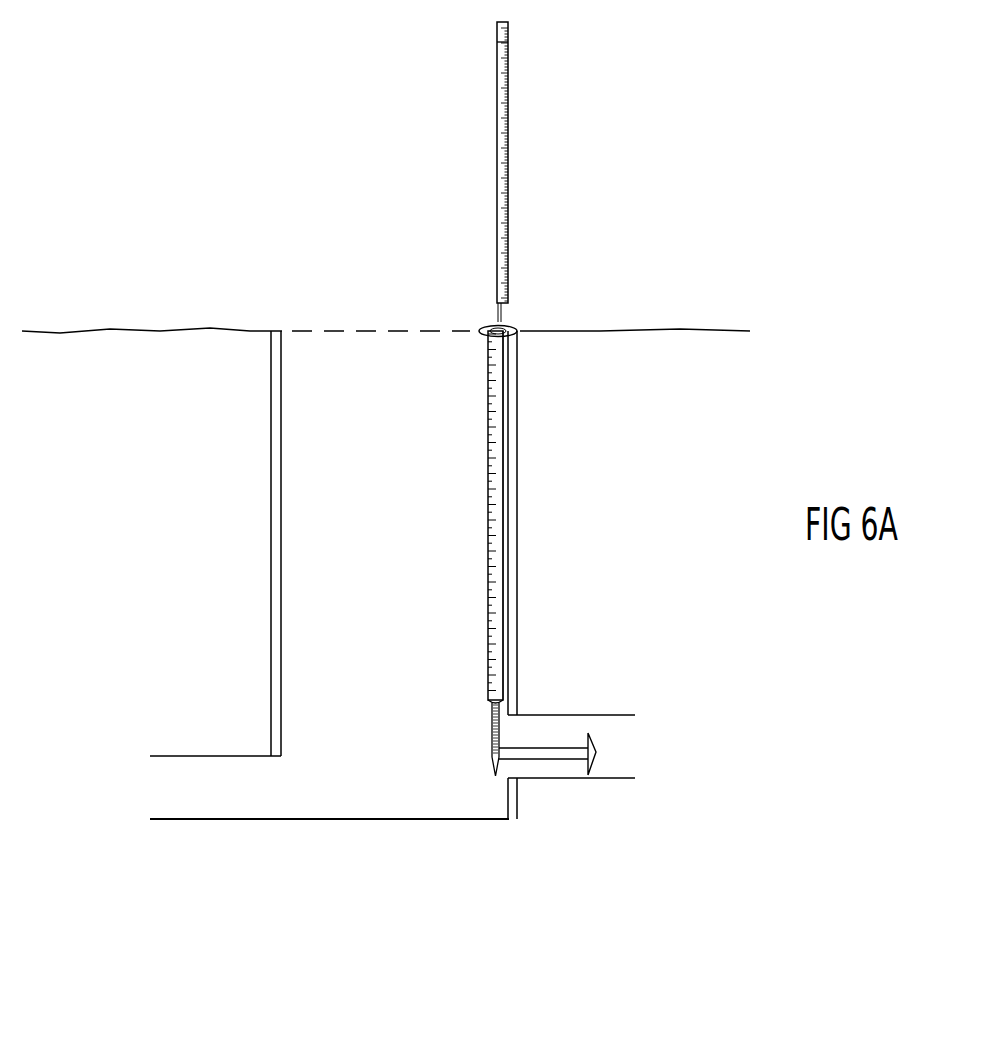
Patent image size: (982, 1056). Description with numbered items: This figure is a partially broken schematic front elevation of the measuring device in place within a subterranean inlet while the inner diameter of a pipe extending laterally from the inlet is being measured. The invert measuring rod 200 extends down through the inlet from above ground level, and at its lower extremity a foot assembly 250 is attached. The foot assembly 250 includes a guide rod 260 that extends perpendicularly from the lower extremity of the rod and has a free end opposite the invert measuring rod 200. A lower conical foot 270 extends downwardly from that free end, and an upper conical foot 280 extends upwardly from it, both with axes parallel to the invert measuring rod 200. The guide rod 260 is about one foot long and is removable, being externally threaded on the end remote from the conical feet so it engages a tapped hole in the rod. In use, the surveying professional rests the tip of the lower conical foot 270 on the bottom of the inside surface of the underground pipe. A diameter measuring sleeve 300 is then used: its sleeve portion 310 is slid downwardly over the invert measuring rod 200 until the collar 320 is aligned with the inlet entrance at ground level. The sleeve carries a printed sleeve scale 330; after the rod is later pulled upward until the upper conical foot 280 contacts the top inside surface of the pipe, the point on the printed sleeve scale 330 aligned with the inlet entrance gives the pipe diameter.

The invert measuring rod 200 is at (485, 104).
The collar 320 is at (510, 324).
The diameter measuring sleeve 300 is at (476, 450).
The printed sleeve scale 330 is at (510, 449).
The sleeve portion 310 is at (492, 527).
The guide rod 260 is at (543, 748).
The upper conical foot 280 is at (592, 734).
The lower conical foot 270 is at (590, 773).
The foot assembly 250 is at (546, 778).